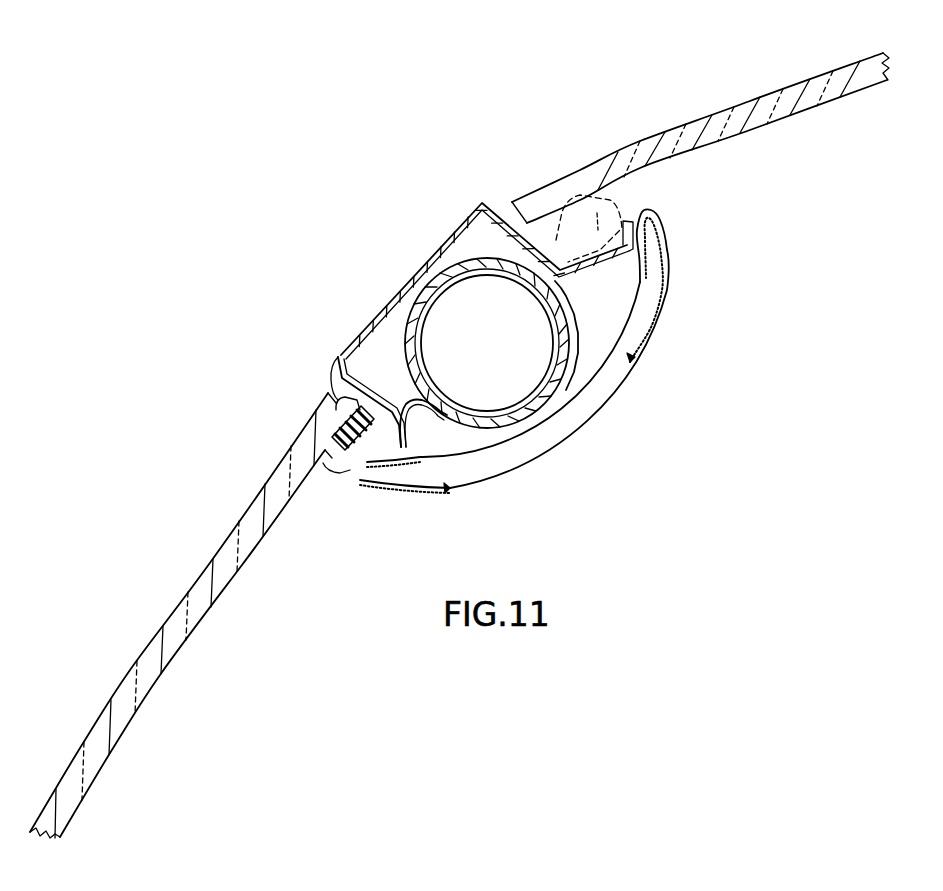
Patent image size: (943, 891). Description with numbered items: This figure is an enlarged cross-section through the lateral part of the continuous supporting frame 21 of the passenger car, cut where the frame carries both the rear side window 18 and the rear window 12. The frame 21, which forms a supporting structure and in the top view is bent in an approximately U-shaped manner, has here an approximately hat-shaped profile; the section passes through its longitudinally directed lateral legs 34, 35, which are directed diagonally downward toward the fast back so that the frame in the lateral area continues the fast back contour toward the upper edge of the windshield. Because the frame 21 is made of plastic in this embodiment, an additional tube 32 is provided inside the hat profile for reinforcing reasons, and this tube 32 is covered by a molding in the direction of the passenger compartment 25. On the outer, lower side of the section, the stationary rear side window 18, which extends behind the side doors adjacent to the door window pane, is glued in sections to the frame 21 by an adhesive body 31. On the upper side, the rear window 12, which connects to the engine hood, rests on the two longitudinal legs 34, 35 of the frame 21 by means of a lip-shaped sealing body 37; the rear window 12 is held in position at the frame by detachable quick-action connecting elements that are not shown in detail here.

The rear window 12 is at (785, 95).
The rear side window 18 is at (133, 677).
The supporting frame 21 is at (421, 262).
The passenger compartment 25 is at (533, 537).
The adhesive body 31 is at (364, 483).
The tube 32 is at (557, 375).
The lateral leg 34 is at (355, 330).
The lateral leg 35 is at (423, 424).
The lip-shaped sealing body 37 is at (596, 190).